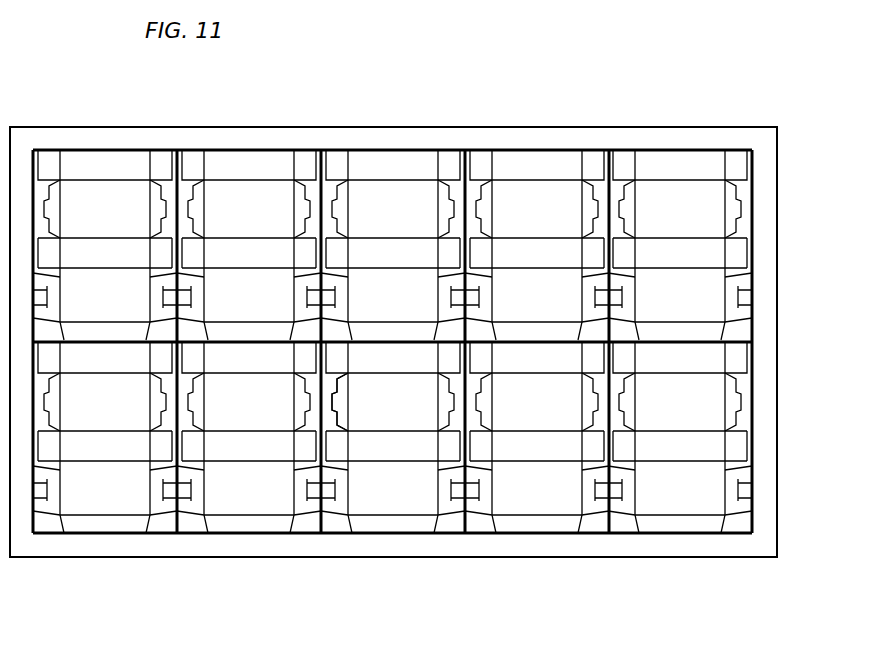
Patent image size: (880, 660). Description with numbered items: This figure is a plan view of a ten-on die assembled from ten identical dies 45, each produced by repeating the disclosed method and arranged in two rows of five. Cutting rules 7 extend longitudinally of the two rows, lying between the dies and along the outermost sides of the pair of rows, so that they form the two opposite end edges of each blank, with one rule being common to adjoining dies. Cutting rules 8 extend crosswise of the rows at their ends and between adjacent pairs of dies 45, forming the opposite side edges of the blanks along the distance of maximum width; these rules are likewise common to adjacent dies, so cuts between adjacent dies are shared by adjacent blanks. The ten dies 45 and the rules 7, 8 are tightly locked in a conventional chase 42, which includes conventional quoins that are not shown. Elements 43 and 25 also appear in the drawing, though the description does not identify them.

The chase 42 is at (508, 112).
The cutting rules 7 is at (115, 148).
The cutting rules 8 is at (36, 157).
The divider panel 43 is at (610, 361).
The dies 45 is at (657, 186).
The bracket 25 is at (350, 410).